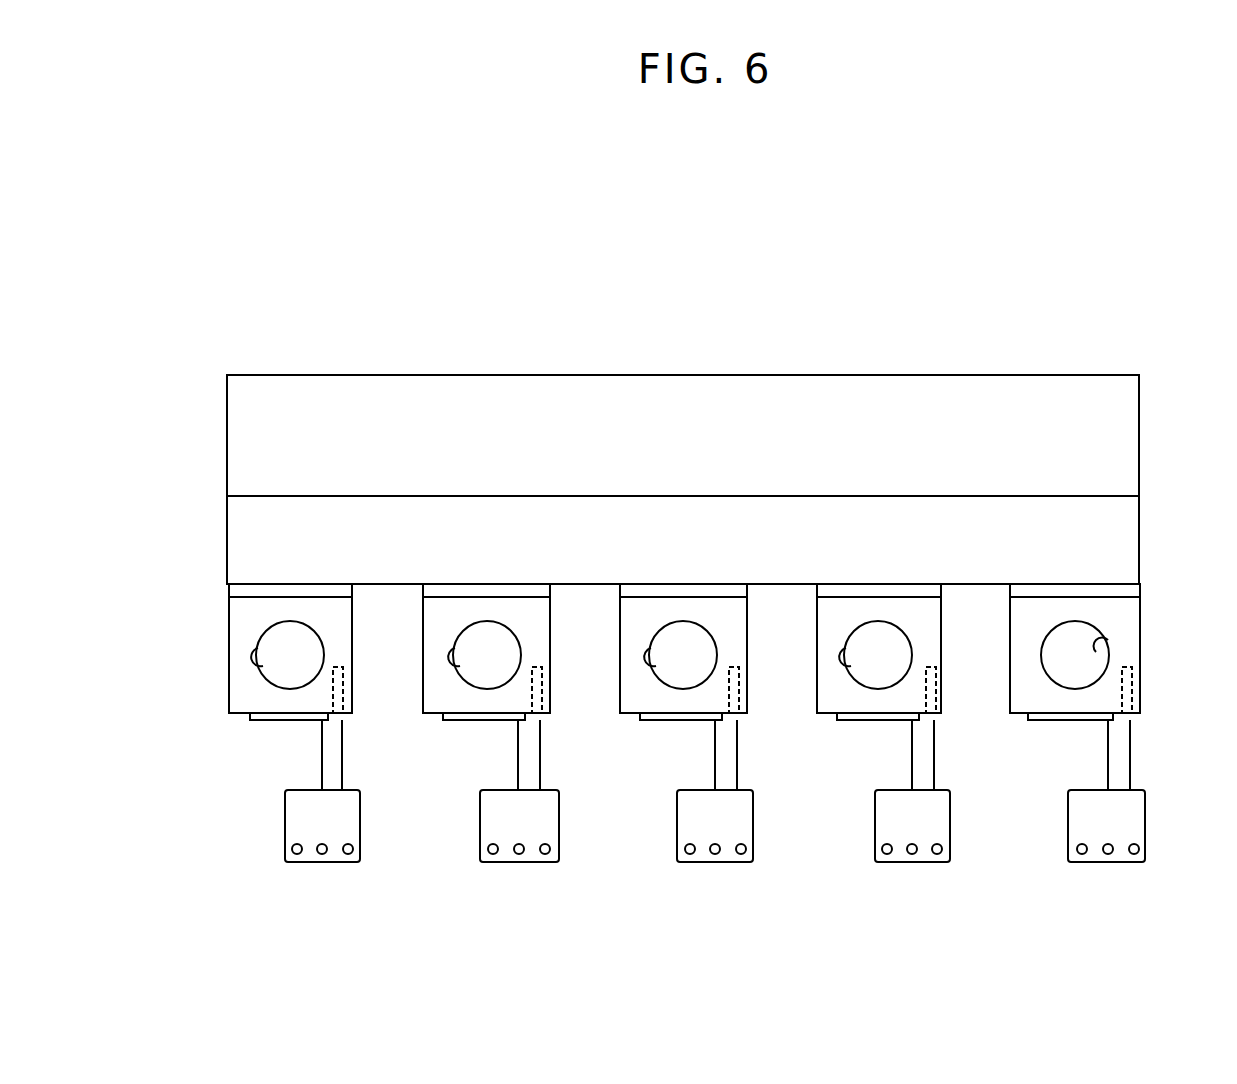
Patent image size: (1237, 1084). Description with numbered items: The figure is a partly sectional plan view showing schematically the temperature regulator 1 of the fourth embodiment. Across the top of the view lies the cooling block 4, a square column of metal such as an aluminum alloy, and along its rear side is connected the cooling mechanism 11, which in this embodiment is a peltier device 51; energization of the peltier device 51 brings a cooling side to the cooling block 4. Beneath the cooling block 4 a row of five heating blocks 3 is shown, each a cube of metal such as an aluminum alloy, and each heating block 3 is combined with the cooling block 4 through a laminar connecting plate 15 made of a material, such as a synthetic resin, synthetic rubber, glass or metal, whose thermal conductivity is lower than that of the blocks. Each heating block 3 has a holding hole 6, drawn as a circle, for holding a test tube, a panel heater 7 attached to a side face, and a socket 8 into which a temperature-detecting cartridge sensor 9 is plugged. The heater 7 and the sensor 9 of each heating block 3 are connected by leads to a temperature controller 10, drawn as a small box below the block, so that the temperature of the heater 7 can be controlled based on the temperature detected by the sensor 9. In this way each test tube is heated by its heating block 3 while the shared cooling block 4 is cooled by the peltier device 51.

The temperature regulator 1 is at (708, 232).
The cooling mechanism 11 is at (881, 372).
The peltier device 51 is at (997, 383).
The cooling block 4 is at (1124, 528).
The connecting plate 15 is at (237, 591).
The heating block 3 is at (238, 630).
The holding hole 6 is at (260, 670).
The socket 8 is at (338, 687).
The panel heater 7 is at (258, 721).
The cartridge sensor 9 is at (346, 715).
The temperature controller 10 is at (336, 857).